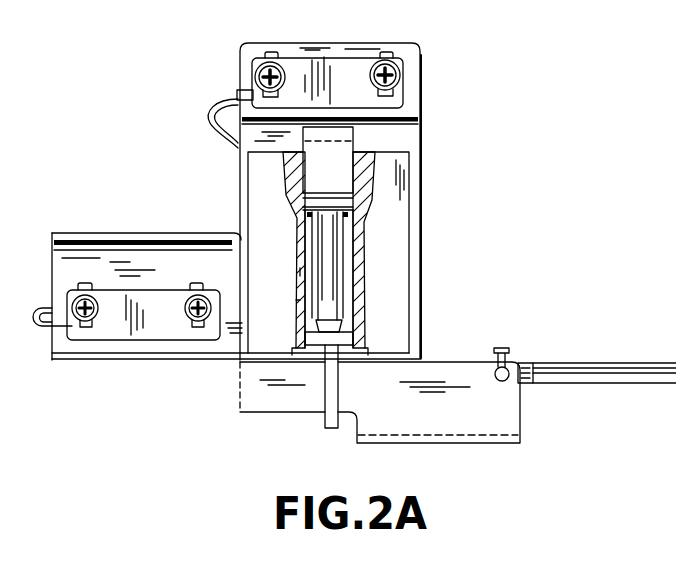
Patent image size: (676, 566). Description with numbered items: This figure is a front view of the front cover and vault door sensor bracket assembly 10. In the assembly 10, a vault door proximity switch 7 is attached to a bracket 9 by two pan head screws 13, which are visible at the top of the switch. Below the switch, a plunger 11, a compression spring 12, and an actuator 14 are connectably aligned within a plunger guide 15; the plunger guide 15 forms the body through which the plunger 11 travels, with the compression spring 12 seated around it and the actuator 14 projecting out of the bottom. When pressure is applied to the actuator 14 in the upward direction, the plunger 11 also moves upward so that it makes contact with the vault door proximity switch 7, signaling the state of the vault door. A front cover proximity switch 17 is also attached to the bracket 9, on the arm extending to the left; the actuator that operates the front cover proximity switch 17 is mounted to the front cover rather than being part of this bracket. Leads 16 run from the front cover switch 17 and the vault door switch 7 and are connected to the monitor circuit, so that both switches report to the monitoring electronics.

The vault door proximity switch 7 is at (258, 82).
The bracket 9 is at (238, 49).
The front cover and vault door sensor bracket assembly 10 is at (466, 169).
The plunger 11 is at (343, 135).
The compression spring 12 is at (360, 257).
The pan head screws 13 is at (283, 78).
The actuator 14 is at (325, 420).
The plunger guide 15 is at (400, 147).
The leads 16 is at (603, 381).
The front cover proximity switch 17 is at (158, 327).